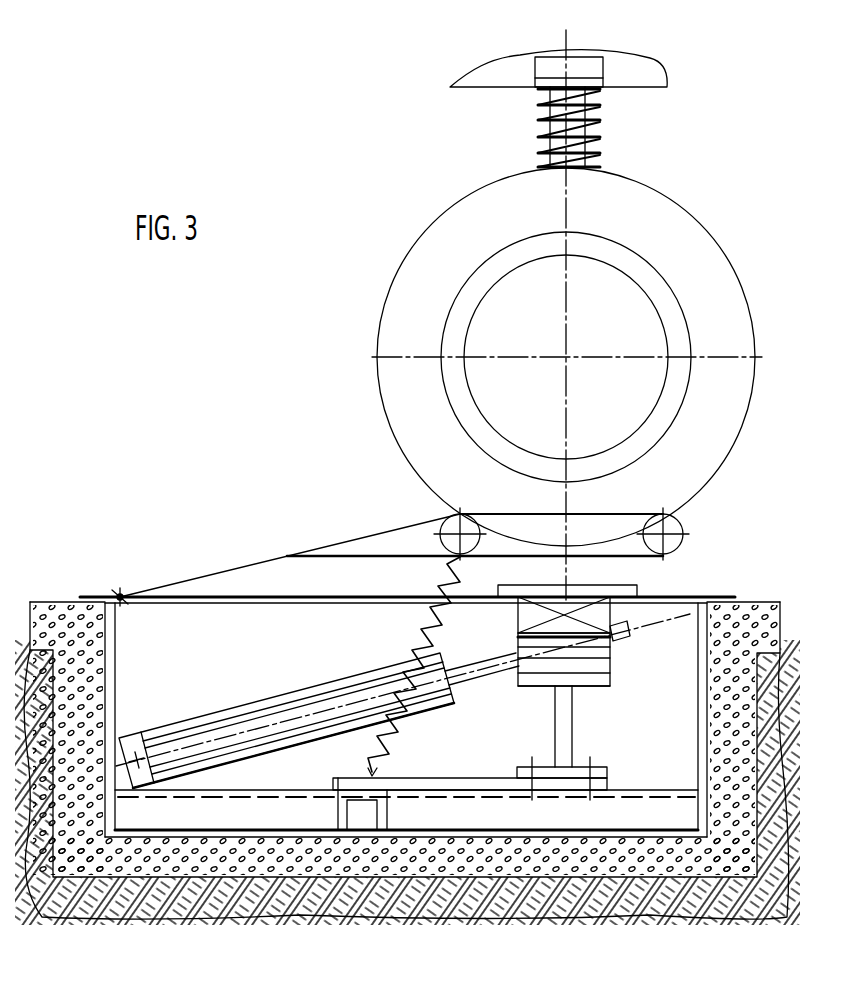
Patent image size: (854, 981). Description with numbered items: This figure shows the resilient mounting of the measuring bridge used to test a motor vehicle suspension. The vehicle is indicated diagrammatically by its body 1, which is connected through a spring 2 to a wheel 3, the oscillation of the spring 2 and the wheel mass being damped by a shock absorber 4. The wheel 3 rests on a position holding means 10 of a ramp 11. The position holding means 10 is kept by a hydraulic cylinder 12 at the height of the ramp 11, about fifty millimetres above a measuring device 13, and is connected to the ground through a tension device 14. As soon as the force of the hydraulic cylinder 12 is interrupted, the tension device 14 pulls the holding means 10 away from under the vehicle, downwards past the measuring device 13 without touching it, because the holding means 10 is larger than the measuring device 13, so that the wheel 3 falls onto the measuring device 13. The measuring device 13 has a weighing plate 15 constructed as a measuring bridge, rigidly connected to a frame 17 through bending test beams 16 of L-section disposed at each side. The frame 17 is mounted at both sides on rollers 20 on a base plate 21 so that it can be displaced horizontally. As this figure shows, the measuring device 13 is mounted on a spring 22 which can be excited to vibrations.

The body 1 is at (482, 75).
The spring 2 is at (598, 105).
The wheel 3 is at (507, 193).
The shock absorber 4 is at (585, 140).
The position holding means 10 is at (450, 522).
The ramp 11 is at (360, 537).
The hydraulic cylinder 12 is at (178, 758).
The measuring device 13 is at (592, 720).
The tension device 14 is at (390, 747).
The weighing plate 15 is at (637, 586).
The bending test beams 16 is at (600, 620).
The frame 17 is at (524, 652).
The rollers 20 is at (537, 667).
The base plate 21 is at (598, 680).
The spring 22 is at (458, 789).